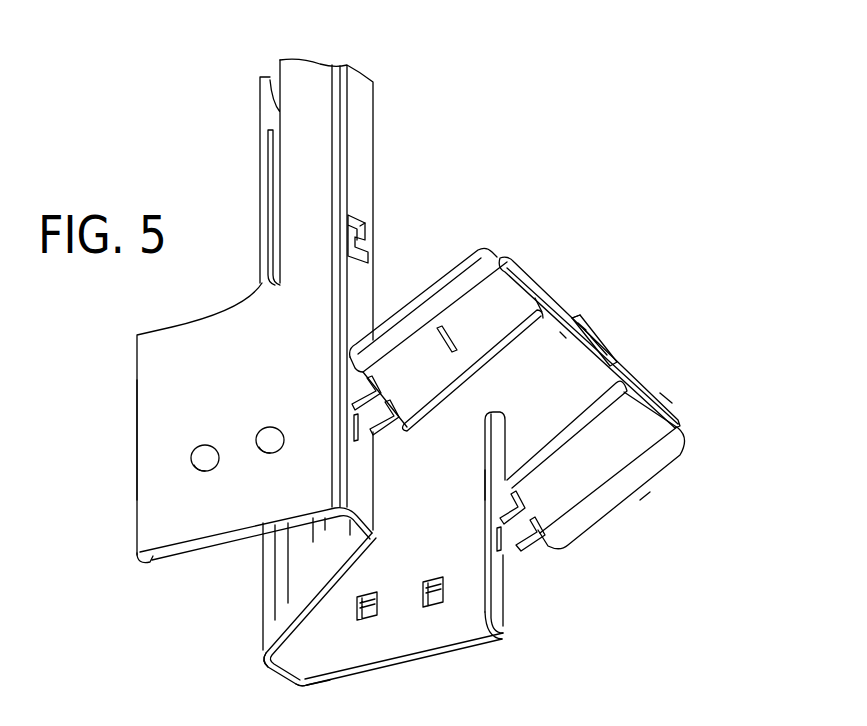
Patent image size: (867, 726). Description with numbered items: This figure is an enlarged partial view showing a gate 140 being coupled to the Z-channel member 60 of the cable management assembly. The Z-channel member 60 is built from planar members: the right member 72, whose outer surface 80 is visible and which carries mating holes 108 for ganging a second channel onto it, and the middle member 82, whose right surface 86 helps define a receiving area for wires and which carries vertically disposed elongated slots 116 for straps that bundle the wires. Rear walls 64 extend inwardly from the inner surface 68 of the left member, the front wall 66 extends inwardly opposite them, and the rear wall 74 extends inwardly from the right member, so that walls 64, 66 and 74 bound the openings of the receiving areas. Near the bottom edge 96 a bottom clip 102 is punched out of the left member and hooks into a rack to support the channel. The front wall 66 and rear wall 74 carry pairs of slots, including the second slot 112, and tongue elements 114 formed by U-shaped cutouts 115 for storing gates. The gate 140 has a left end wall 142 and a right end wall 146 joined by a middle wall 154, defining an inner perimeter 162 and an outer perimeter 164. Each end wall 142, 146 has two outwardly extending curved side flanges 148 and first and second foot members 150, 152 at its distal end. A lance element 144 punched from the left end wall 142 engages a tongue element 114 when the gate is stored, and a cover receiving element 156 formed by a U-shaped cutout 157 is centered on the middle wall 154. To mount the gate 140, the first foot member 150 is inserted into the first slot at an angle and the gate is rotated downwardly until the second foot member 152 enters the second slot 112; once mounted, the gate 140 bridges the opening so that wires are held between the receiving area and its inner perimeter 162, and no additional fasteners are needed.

The Z-channel member 60 is at (306, 57).
The rear wall 64 is at (500, 615).
The front wall 66 is at (272, 668).
The inner surface 68 is at (463, 637).
The right member 72 is at (167, 443).
The rear wall 74 is at (358, 113).
The outer surface 80 is at (177, 372).
The middle member 82 is at (270, 628).
The right surface 86 is at (303, 577).
The bottom edge 96 is at (302, 685).
The bottom clip 102 is at (433, 607).
The mating hole 108 is at (267, 453).
The second slot 112 is at (356, 448).
The tongue element 114 is at (370, 252).
The U-shaped cutout 115 is at (370, 233).
The elongated slot 116 is at (268, 163).
The gate 140 is at (620, 507).
The left end wall 142 is at (492, 300).
The lance element 144 is at (453, 357).
The right end wall 146 is at (630, 438).
The side flange 148 is at (447, 267).
The first foot member 150 is at (484, 482).
The second foot member 152 is at (393, 433).
The middle wall 154 is at (537, 293).
The cover receiving element 156 is at (605, 343).
The U-shaped cutout 157 is at (585, 327).
The inner perimeter 162 is at (562, 330).
The outer perimeter 164 is at (665, 392).